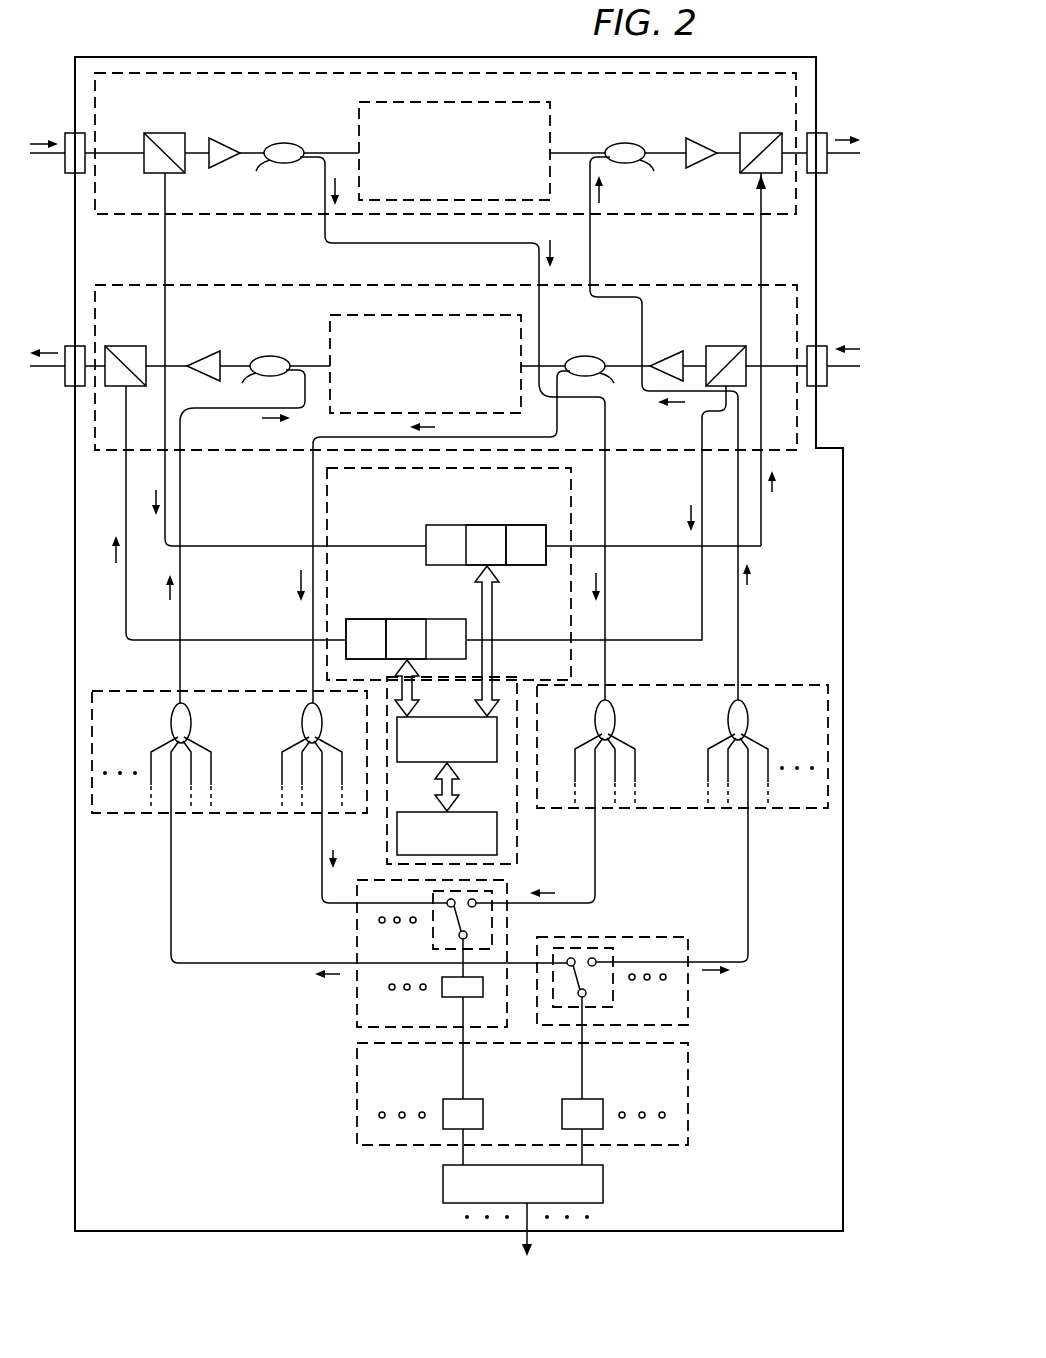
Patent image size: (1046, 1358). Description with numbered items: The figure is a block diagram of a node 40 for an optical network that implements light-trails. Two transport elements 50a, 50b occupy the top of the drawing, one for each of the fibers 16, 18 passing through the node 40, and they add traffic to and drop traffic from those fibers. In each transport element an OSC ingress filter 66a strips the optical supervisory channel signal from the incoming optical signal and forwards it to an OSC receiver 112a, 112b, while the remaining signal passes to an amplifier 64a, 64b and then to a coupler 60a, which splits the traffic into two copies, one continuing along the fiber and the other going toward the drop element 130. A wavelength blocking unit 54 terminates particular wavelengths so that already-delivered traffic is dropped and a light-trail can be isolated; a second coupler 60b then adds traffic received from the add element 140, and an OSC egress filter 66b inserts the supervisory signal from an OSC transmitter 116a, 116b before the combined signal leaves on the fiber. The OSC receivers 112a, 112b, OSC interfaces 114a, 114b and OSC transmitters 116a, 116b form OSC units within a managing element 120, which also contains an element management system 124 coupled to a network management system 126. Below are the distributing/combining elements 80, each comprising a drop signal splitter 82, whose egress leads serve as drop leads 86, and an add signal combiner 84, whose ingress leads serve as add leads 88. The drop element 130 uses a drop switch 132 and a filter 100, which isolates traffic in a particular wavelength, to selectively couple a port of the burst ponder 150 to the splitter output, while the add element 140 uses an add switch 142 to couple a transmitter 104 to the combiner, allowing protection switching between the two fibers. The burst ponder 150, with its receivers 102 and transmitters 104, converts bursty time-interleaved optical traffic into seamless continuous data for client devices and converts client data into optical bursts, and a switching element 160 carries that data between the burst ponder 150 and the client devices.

The optical network node 40 is at (203, 54).
The fiber 16 is at (46, 158).
The fiber 18 is at (49, 368).
The OSC ingress filter 66a is at (153, 132).
The OSC egress filter 66b is at (763, 130).
The amplifier 64a is at (230, 140).
The amplifier 64b is at (704, 137).
The coupler 60a is at (287, 144).
The coupler 60b is at (626, 143).
The wavelength blocking unit 54 is at (466, 177).
The transport element 50a is at (244, 224).
The transport element 50b is at (686, 277).
The OSC receiver 112a is at (425, 530).
The OSC interface 114a is at (472, 524).
The OSC transmitter 116a is at (529, 524).
The OSC receiver 112b is at (437, 662).
The OSC interface 114b is at (405, 618).
The OSC transmitter 116b is at (362, 618).
The element management system 124 is at (464, 750).
The network management system 126 is at (464, 843).
The managing element 120 is at (526, 834).
The distributing/combining element 80 is at (228, 820).
The drop signal splitter 82 is at (300, 720).
The add signal combiner 84 is at (193, 727).
The drop lead 86 is at (343, 762).
The add lead 88 is at (150, 758).
The drop element 130 is at (349, 932).
The drop switch 132 is at (430, 928).
The filter 100 is at (440, 990).
The add element 140 is at (633, 928).
The add switch 142 is at (614, 985).
The receiver 102 is at (455, 1098).
The transmitter 104 is at (588, 1098).
The burst ponder 150 is at (698, 1101).
The switching element 160 is at (605, 1182).